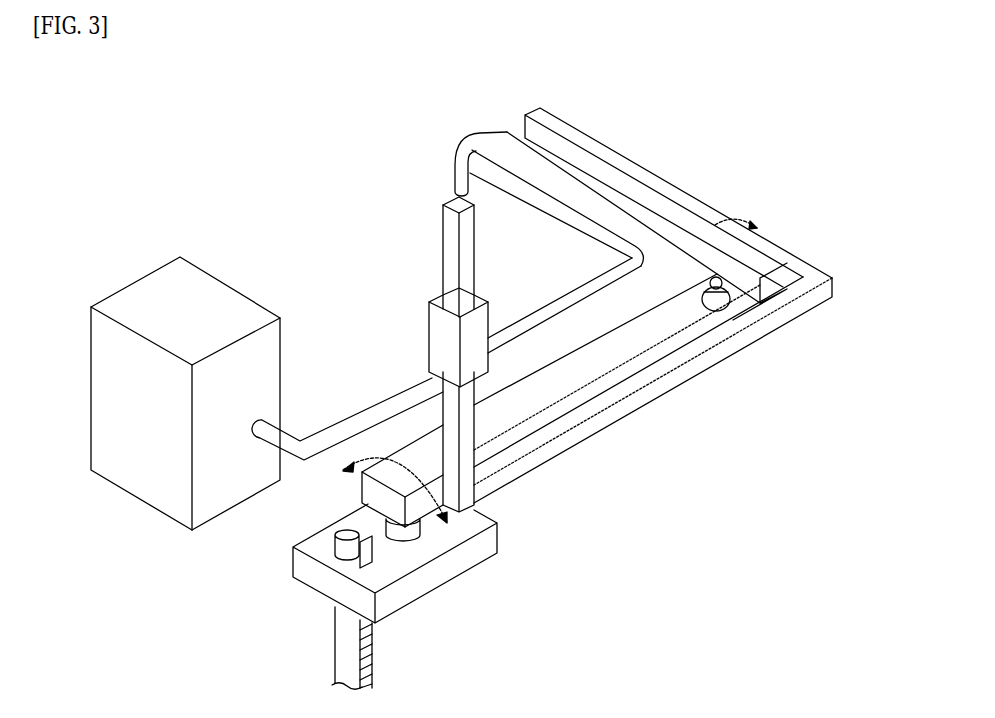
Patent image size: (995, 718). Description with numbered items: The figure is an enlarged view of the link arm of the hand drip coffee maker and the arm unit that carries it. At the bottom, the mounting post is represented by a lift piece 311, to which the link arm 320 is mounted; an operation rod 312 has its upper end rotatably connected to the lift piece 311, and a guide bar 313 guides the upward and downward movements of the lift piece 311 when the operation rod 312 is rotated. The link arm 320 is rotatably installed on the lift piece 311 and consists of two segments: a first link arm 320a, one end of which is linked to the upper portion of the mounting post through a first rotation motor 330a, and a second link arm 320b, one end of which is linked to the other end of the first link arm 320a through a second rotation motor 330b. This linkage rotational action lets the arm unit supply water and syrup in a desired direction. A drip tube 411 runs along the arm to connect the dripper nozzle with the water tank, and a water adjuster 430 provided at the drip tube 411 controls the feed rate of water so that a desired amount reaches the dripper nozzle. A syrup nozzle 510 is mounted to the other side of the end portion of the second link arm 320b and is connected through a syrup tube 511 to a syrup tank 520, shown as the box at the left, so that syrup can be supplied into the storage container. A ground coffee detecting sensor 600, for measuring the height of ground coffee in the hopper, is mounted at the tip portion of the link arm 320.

The lift piece 311 is at (443, 583).
The operation rod 312 is at (343, 645).
The guide bar 313 is at (375, 652).
The link arm 320 is at (670, 410).
The first link arm 320a is at (660, 327).
The second link arm 320b is at (654, 276).
The first rotation motor 330a is at (423, 528).
The second rotation motor 330b is at (733, 312).
The drip tube 411 is at (594, 150).
The water adjuster 430 is at (437, 332).
The syrup nozzle 510 is at (455, 176).
The syrup tube 511 is at (578, 290).
The syrup tank 520 is at (140, 478).
The ground coffee detecting sensor 600 is at (468, 128).